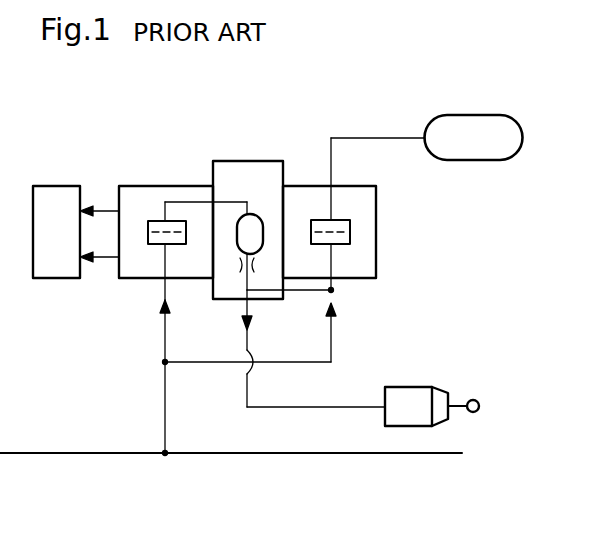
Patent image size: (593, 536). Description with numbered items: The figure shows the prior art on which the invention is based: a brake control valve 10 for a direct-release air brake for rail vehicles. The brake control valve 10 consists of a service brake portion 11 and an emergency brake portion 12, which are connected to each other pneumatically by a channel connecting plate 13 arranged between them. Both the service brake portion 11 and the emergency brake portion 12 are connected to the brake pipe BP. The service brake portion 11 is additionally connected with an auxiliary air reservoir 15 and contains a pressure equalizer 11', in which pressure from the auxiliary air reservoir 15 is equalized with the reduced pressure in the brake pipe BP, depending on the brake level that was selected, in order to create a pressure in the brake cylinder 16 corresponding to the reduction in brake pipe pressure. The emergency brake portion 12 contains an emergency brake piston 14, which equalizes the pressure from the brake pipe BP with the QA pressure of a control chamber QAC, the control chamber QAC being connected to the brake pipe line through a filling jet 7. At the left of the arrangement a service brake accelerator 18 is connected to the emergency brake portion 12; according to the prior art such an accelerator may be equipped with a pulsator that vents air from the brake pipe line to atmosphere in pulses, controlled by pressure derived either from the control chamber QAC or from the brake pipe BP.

The throttle 7 is at (238, 267).
The brake control valve 10 is at (239, 86).
The service brake portion 11 is at (330, 211).
The pressure equalizer 11' is at (377, 214).
The emergency brake portion 12 is at (147, 200).
The channel connecting plate 13 is at (245, 173).
The emergency brake piston 14 is at (152, 245).
The auxiliary air reservoir 15 is at (470, 132).
The brake cylinder 16 is at (410, 400).
The service brake accelerator 18 is at (55, 196).
The control chamber QAC is at (250, 225).
The brake pipe BP is at (267, 453).